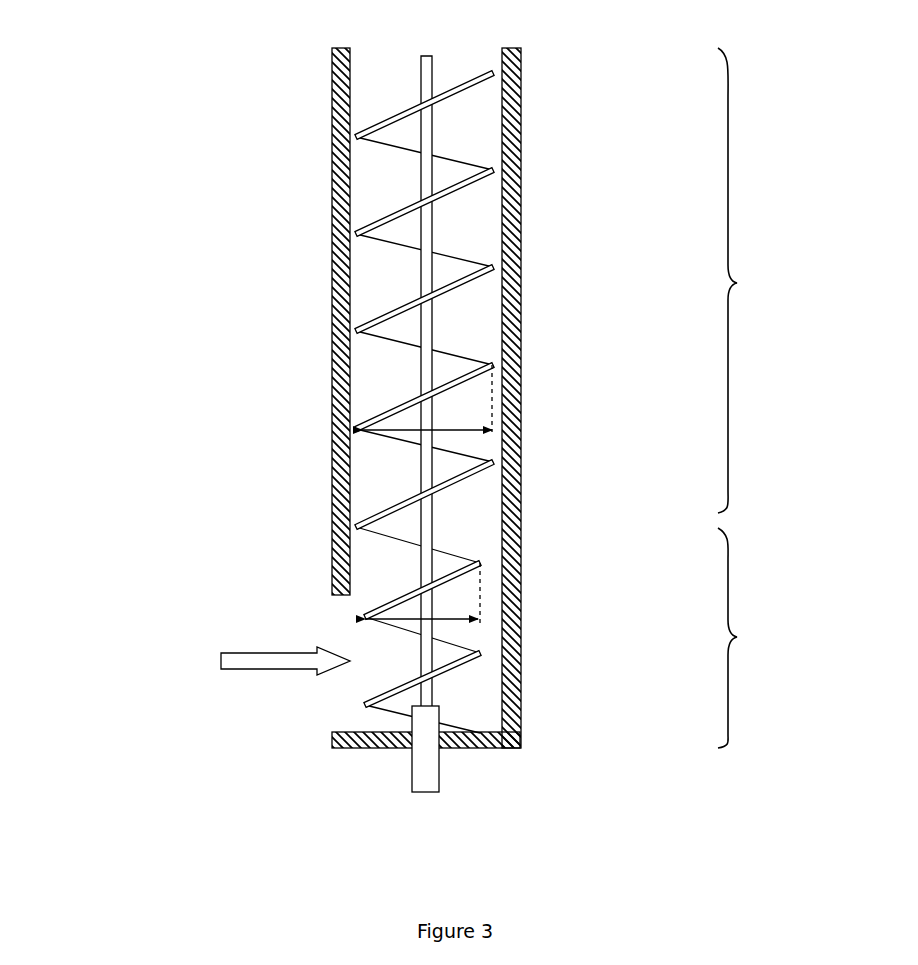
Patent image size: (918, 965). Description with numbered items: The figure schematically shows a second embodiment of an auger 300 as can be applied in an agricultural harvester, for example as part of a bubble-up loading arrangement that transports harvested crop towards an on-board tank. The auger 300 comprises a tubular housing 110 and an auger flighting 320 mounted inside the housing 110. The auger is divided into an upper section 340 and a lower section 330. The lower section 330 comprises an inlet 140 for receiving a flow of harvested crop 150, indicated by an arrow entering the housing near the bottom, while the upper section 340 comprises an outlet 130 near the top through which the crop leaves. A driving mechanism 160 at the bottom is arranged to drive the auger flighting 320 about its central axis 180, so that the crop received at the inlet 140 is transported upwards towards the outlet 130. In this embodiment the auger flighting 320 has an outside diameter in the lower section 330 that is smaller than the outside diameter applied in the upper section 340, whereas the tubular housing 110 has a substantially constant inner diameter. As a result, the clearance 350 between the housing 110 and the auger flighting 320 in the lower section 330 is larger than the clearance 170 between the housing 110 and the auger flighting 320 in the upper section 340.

The auger 300 is at (198, 117).
The tubular housing 110 is at (520, 255).
The outlet 130 is at (457, 50).
The inlet 140 is at (350, 638).
The flow of harvested crop 150 is at (260, 658).
The driving mechanism 160 is at (439, 765).
The clearance in the upper section 170 is at (497, 370).
The central axis 180 is at (423, 460).
The auger flighting 320 is at (398, 394).
The lower section 330 is at (760, 638).
The upper section 340 is at (754, 280).
The clearance in the lower section 350 is at (493, 565).